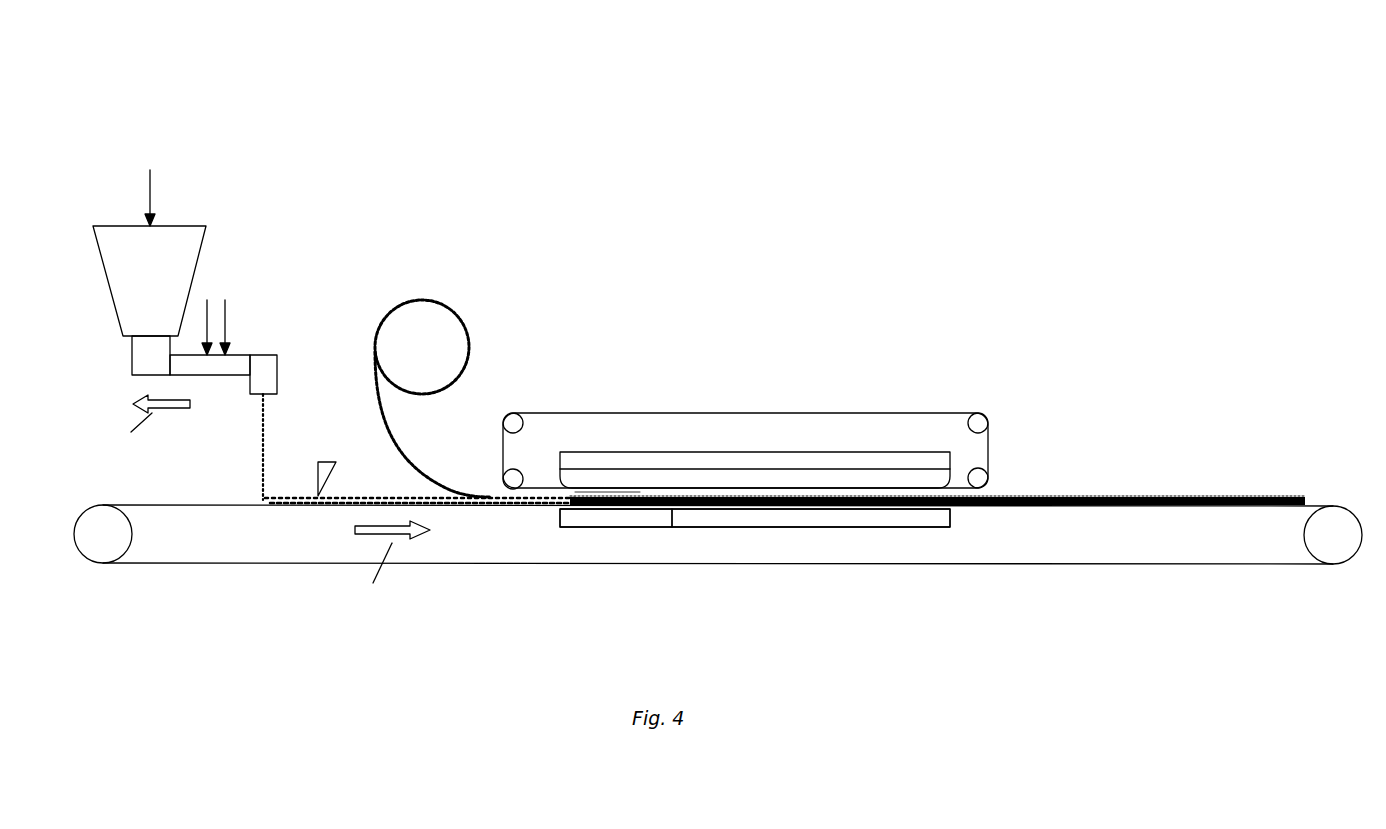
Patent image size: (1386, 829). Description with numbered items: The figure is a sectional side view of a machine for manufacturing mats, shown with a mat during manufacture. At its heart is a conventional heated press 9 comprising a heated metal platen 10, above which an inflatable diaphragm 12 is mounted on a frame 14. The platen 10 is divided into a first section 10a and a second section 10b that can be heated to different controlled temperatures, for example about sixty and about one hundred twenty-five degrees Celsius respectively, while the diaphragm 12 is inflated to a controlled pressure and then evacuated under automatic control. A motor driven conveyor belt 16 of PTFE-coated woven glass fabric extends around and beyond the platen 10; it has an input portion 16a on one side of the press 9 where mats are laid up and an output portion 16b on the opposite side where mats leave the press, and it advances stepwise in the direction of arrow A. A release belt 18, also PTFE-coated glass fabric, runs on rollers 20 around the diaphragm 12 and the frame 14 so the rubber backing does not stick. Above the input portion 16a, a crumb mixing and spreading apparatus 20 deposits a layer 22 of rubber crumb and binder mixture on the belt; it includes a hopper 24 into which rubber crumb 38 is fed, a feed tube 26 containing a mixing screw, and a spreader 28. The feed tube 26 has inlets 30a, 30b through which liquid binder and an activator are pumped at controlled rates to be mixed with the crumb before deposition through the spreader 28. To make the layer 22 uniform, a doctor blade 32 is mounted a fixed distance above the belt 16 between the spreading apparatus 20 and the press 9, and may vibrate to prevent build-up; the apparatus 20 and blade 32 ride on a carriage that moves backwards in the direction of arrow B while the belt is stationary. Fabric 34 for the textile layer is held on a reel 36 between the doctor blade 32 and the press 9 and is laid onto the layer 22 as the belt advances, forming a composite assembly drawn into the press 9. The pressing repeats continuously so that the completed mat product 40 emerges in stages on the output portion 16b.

The heated press 9 is at (784, 364).
The heated metal platen 10 is at (745, 528).
The first section of platen 10a is at (615, 528).
The second section of platen 10b is at (875, 528).
The inflatable diaphragm 12 is at (599, 490).
The frame 14 is at (821, 450).
The conveyor belt 16 is at (241, 565).
The input portion of conveyor belt 16a is at (224, 502).
The output portion of conveyor belt 16b is at (1324, 509).
The release belt 18 is at (932, 412).
The crumb mixing and spreading apparatus 20 is at (324, 144).
The crumb/binder layer 22 is at (372, 497).
The hopper 24 is at (170, 247).
The feed tube 26 is at (245, 355).
The spreader 28 is at (264, 375).
The binder inlet 30a is at (210, 318).
The activator inlet 30b is at (229, 326).
The doctor blade 32 is at (317, 462).
The fabric 34 is at (411, 466).
The reel 36 is at (448, 340).
The rubber crumb 38 is at (153, 184).
The completed mat product 40 is at (1193, 489).